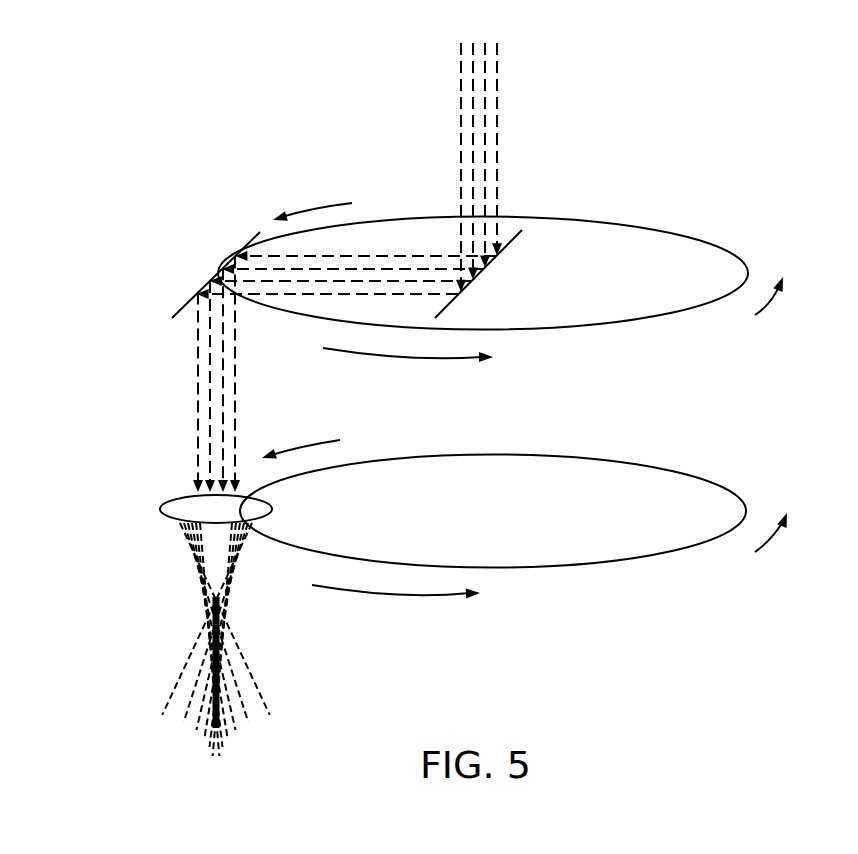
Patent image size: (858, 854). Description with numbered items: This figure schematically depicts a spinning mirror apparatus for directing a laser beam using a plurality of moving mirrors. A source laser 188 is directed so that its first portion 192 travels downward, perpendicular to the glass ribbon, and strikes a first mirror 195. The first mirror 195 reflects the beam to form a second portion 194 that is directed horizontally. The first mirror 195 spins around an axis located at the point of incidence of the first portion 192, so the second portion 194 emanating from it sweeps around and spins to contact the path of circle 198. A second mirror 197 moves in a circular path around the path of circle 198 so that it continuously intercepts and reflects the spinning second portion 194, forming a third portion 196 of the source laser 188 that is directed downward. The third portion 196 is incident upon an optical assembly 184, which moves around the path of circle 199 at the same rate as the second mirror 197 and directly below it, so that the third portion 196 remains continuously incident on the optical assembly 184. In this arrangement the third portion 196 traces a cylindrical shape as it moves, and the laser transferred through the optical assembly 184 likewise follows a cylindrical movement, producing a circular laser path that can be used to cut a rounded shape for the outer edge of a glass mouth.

The optical assembly 184 is at (272, 508).
The source laser 188 is at (157, 374).
The first portion of the source laser 192 is at (485, 127).
The second portion of the source laser 194 is at (385, 257).
The first mirror 195 is at (510, 243).
The third portion of the source laser 196 is at (197, 443).
The second mirror 197 is at (252, 240).
The path of circle 198 is at (650, 228).
The path of circle 199 is at (662, 468).